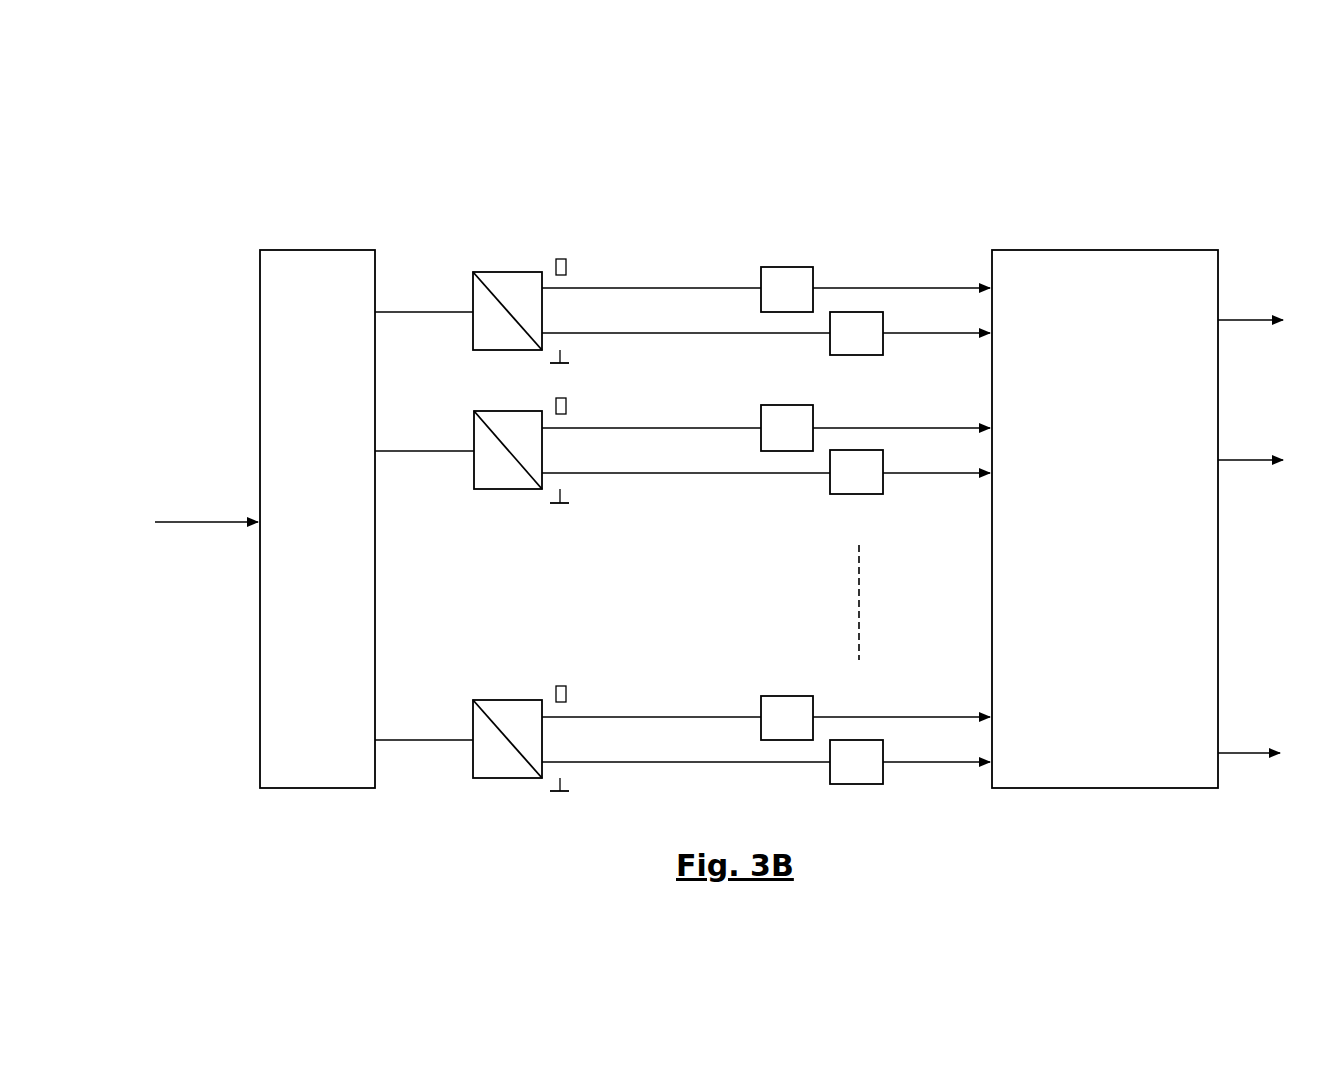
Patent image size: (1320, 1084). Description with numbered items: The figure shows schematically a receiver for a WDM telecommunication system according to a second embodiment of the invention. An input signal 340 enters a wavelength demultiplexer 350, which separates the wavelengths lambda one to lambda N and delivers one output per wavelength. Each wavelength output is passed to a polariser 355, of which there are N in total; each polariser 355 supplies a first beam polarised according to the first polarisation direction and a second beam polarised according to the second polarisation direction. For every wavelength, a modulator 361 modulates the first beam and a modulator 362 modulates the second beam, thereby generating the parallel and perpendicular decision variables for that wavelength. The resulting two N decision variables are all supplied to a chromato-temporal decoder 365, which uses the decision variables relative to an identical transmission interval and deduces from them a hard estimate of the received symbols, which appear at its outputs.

The input optical signal 340 is at (184, 520).
The wavelength demultiplexer 350 is at (300, 250).
The polarization beam splitter 355 is at (500, 272).
The modulator 361 is at (776, 267).
The modulator 362 is at (858, 312).
The chromato-temporal decoder 365 is at (1128, 250).